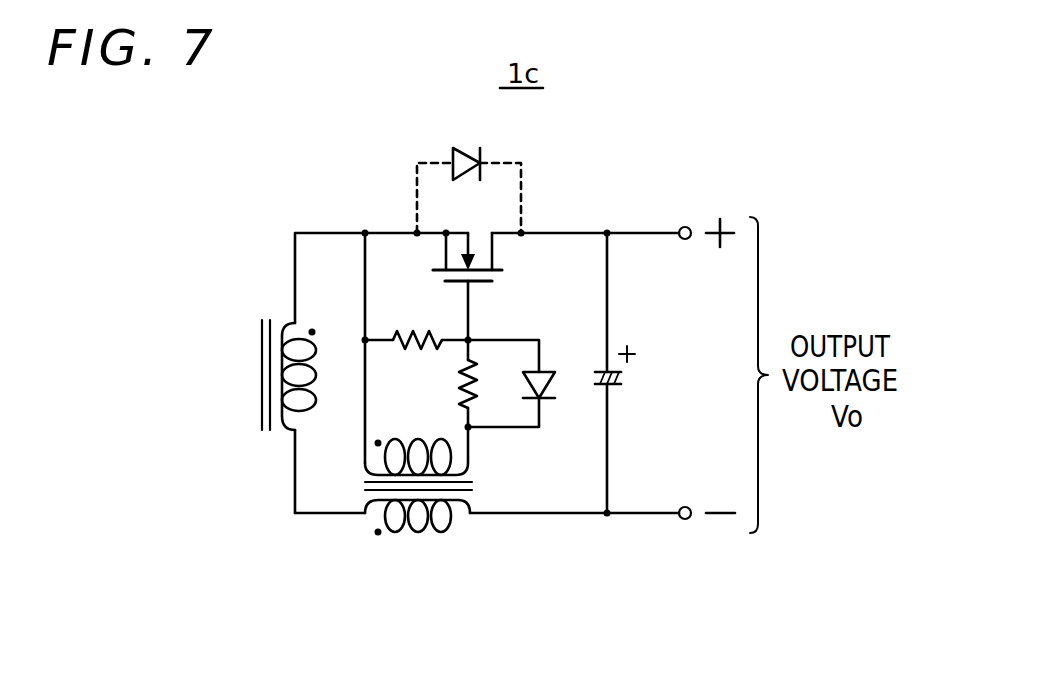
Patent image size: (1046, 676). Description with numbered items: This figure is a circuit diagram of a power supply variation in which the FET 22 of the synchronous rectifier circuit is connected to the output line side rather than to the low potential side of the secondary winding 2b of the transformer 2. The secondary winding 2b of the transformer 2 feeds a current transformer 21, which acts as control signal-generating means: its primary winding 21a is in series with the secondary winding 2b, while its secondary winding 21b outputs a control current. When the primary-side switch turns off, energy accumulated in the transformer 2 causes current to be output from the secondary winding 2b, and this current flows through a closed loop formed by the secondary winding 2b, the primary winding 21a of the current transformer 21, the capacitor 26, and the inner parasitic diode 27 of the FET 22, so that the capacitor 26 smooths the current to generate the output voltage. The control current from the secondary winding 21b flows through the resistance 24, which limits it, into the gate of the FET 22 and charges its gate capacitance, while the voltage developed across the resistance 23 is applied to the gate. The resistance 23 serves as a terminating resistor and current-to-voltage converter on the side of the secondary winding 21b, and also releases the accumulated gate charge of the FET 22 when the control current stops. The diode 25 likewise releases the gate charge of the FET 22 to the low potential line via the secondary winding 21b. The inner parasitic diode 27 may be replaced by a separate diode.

The transformer 2 is at (265, 283).
The secondary winding 2b is at (312, 397).
The current transformer 21 is at (494, 486).
The primary winding 21a is at (418, 535).
The secondary winding 21b is at (418, 440).
The FET 22 is at (481, 283).
The resistance 23 is at (427, 325).
The resistance 24 is at (478, 378).
The diode 25 is at (553, 392).
The capacitor 26 is at (612, 386).
The inner parasitic diode 27 is at (465, 150).